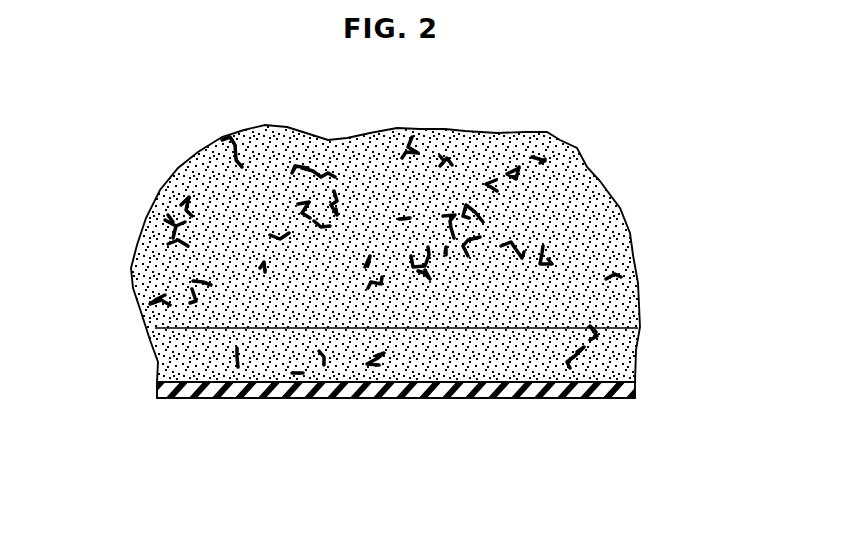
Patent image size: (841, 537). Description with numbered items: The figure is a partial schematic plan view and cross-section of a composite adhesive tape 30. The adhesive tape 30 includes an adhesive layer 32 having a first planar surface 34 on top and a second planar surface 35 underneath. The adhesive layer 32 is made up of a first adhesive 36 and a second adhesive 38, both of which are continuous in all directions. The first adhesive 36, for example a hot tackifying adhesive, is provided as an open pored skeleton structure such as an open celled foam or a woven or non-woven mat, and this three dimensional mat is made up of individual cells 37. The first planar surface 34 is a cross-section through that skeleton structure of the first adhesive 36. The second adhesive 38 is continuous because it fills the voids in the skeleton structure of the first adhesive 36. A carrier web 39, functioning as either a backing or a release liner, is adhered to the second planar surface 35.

The adhesive tape 30 is at (125, 179).
The adhesive layer 32 is at (381, 235).
The first planar surface 34 is at (626, 311).
The second planar surface 35 is at (618, 400).
The first adhesive 36 is at (243, 140).
The individual cells 37 is at (170, 229).
The second adhesive 38 is at (157, 273).
The carrier web 39 is at (282, 390).